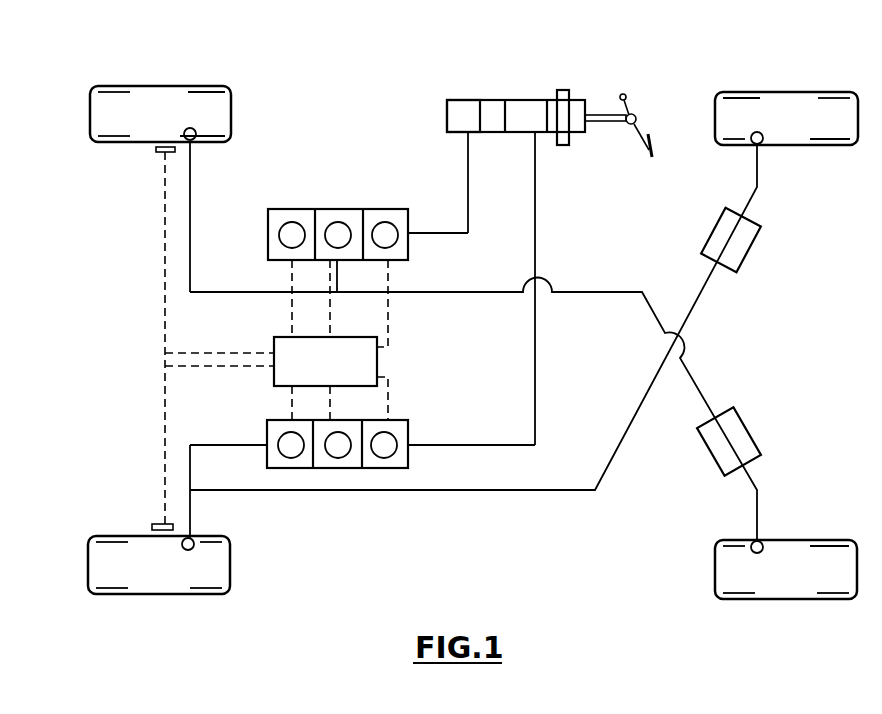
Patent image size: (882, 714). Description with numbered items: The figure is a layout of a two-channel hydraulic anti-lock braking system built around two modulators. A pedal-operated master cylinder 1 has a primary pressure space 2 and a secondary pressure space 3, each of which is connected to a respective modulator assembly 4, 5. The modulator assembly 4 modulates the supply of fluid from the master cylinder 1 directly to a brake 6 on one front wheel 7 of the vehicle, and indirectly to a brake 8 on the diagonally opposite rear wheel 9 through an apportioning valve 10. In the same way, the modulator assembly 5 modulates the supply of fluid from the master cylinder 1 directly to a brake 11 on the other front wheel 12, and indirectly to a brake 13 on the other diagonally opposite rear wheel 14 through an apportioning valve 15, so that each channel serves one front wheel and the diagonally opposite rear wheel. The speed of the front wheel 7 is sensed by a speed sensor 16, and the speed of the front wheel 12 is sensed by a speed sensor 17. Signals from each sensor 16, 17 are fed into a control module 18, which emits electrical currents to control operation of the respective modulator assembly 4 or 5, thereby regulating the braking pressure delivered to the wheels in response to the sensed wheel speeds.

The master cylinder 1 is at (567, 143).
The primary pressure space 2 is at (516, 84).
The secondary pressure space 3 is at (460, 118).
The modulator assembly 4 is at (345, 468).
The modulator assembly 5 is at (339, 209).
The brake 6 is at (193, 548).
The front wheel 7 is at (138, 567).
The brake 8 is at (767, 146).
The rear wheel 9 is at (840, 123).
The apportioning valve 10 is at (738, 242).
The brake 11 is at (191, 141).
The front wheel 12 is at (142, 117).
The brake 13 is at (762, 546).
The rear wheel 14 is at (782, 577).
The apportioning valve 15 is at (733, 438).
The speed sensor 16 is at (158, 523).
The speed sensor 17 is at (162, 152).
The control module 18 is at (336, 371).